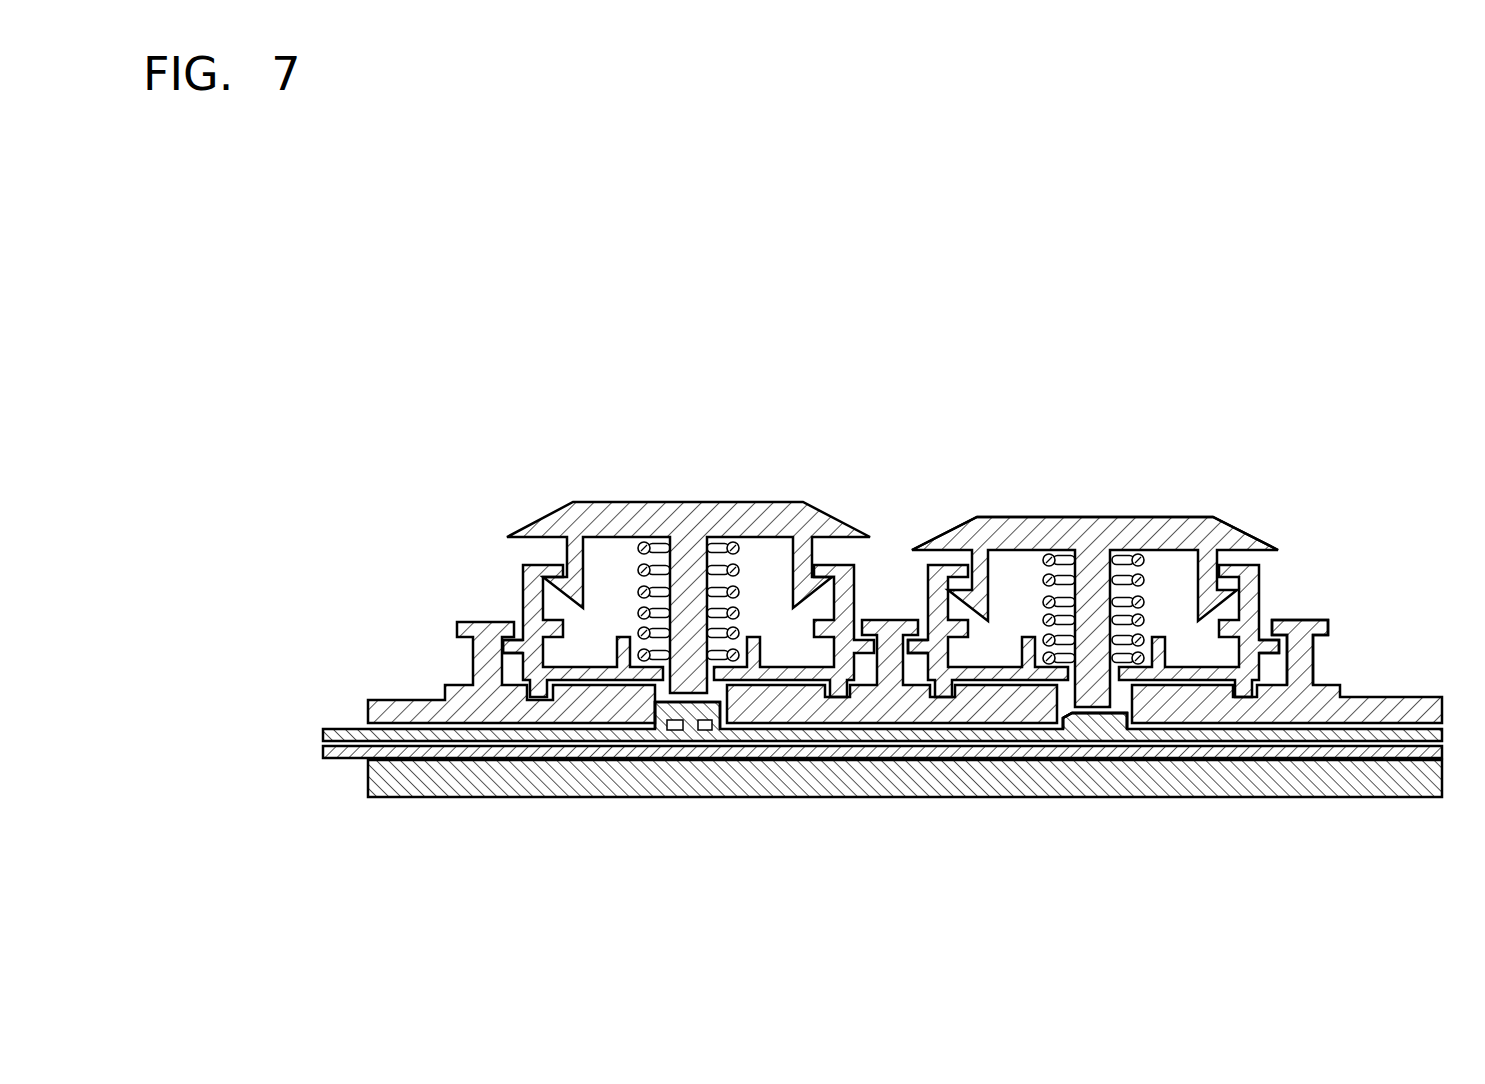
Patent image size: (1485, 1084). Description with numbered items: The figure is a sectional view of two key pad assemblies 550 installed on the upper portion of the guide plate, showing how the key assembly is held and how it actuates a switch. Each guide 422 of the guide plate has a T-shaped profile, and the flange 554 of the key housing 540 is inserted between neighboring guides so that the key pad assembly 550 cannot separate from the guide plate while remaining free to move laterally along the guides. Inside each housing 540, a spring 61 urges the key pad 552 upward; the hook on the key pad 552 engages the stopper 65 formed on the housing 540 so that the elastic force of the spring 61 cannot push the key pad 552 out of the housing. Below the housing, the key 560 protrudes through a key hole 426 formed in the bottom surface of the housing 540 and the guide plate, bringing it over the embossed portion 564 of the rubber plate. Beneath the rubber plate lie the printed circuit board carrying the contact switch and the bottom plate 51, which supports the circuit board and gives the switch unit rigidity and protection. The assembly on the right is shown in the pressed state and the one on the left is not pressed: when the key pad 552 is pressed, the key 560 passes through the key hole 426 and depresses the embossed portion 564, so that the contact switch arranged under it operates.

The bottom plate 51 is at (1417, 775).
The spring 61 is at (650, 545).
The stopper 65 is at (937, 565).
The guide 422 is at (1300, 620).
The key hole 426 is at (1133, 710).
The key housing 540 is at (540, 590).
The key pad assembly 550 is at (623, 470).
The key pad 552 is at (1213, 520).
The flange 554 is at (513, 645).
The key 560 is at (1073, 714).
The embossed portion 564 is at (695, 745).